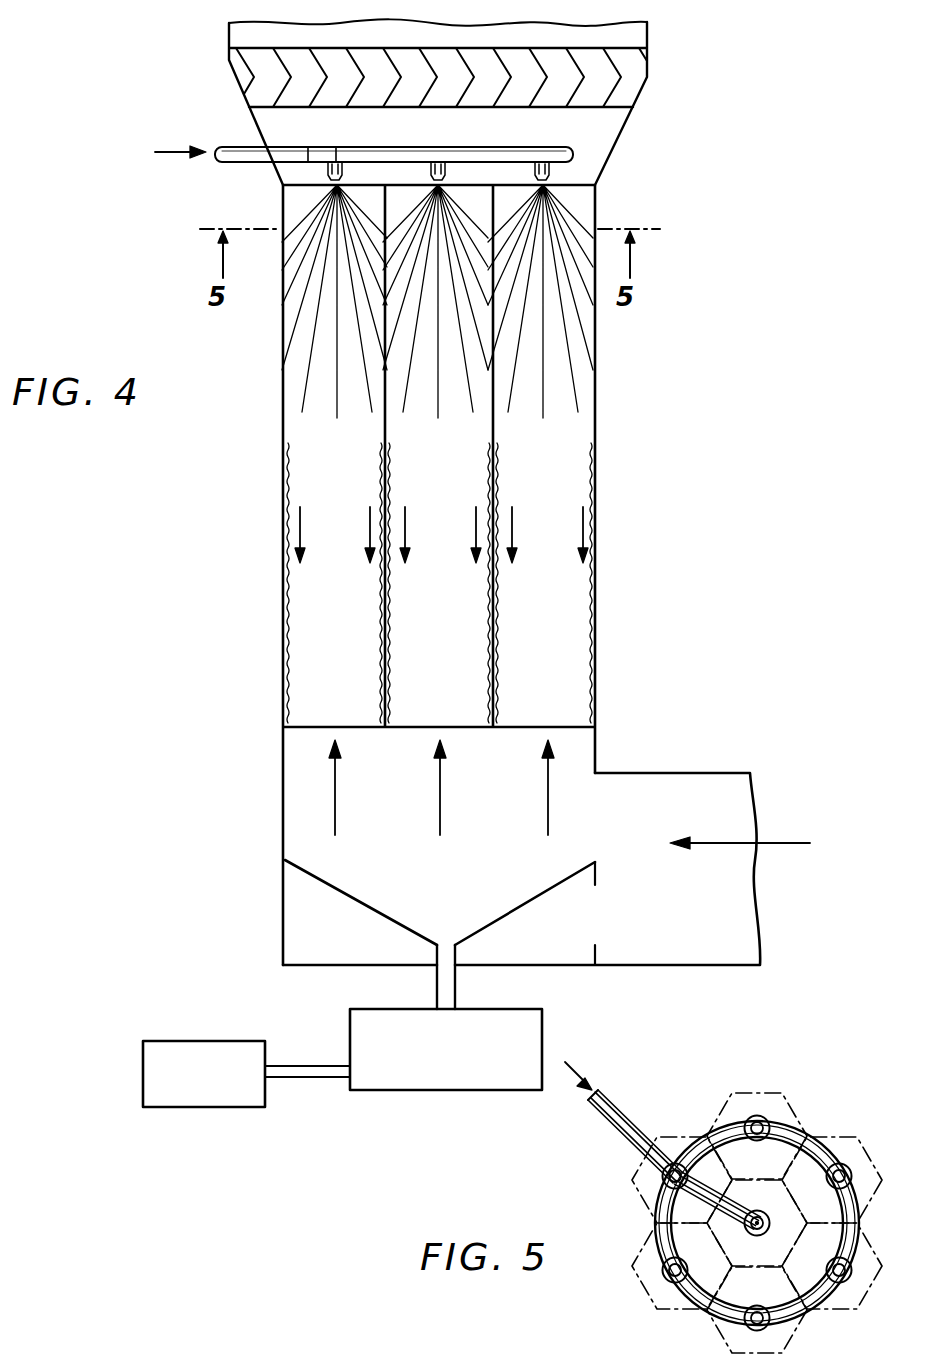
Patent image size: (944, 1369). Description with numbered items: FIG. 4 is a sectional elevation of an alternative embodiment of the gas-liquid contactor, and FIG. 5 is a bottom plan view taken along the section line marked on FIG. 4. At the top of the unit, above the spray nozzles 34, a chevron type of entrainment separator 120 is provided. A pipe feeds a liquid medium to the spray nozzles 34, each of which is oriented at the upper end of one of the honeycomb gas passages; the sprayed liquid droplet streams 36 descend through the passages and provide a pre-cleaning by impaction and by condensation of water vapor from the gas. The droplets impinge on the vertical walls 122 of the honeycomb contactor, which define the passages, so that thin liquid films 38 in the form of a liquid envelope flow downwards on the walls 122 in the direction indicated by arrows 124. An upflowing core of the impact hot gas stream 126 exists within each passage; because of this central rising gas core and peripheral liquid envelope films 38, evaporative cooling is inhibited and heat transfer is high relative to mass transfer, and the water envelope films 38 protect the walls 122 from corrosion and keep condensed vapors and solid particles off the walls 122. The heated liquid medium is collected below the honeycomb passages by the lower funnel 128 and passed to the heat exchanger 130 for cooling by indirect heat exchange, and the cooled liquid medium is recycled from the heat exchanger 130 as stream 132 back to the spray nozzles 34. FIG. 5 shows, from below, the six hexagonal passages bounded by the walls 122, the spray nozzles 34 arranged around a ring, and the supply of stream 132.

In FIG. 4, the spray nozzle 34 is at (345, 160).
In FIG. 5, the spray nozzle 34 is at (770, 1122).
In FIG. 4, the sprayed liquid droplets streams 36 is at (333, 333).
In FIG. 4, the liquid film 38 is at (381, 490).
In FIG. 4, the chevron type entrainment separator 120 is at (632, 73).
In FIG. 4, the vertical walls 122 is at (283, 432).
In FIG. 5, the vertical walls 122 is at (778, 1088).
In FIG. 4, the arrows 124 is at (370, 530).
In FIG. 4, the impact hot gas stream 126 is at (440, 797).
In FIG. 4, the lower funnel 128 is at (526, 905).
In FIG. 4, the heat exchanger 130 is at (544, 1020).
In FIG. 4, the stream 132 is at (172, 154).
In FIG. 5, the stream 132 is at (585, 1070).